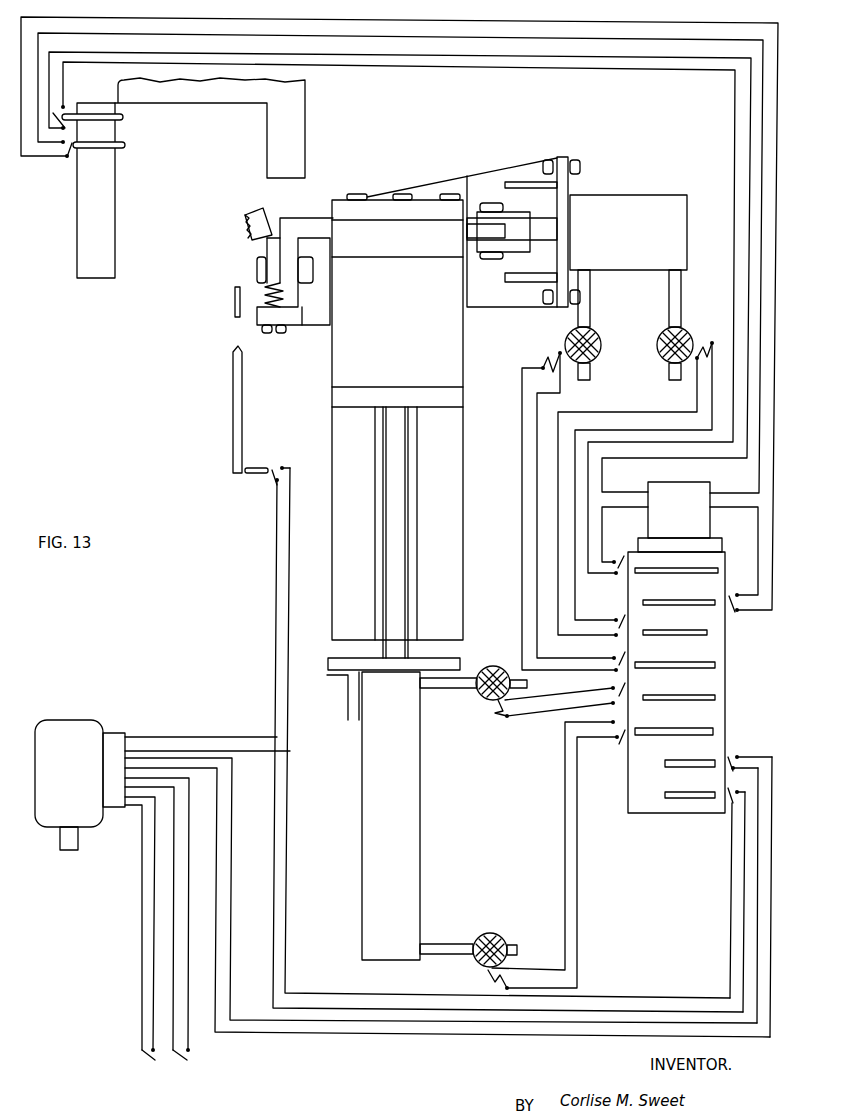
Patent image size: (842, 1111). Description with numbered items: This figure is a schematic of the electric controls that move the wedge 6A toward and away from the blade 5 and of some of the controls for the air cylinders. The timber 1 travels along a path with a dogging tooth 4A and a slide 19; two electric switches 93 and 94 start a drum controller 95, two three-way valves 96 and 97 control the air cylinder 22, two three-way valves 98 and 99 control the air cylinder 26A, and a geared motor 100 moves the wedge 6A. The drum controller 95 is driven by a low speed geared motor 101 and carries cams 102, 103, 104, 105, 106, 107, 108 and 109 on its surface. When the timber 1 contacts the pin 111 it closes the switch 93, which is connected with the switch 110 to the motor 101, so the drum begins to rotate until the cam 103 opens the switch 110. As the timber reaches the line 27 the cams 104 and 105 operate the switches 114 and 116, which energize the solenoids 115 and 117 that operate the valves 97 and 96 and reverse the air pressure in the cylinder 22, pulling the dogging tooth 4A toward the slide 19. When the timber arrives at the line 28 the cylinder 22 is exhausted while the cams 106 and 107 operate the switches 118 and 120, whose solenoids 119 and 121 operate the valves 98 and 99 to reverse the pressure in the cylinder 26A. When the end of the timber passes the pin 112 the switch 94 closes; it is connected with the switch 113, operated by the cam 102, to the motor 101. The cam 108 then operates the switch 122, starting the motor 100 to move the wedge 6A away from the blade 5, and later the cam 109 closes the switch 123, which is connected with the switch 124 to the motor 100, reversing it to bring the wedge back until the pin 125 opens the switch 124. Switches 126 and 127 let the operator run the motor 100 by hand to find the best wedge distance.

The timber 1 is at (193, 108).
The dogging tooth 4A is at (243, 209).
The blade 5 is at (232, 300).
The wedge 6A is at (230, 425).
The slide 19 is at (330, 340).
The air cylinder 22 is at (611, 190).
The air cylinder 26A is at (425, 795).
The line 27 is at (220, 230).
The line 28 is at (215, 365).
The electric switch 93 is at (65, 160).
The electric switch 94 is at (70, 105).
The drum controller 95 is at (731, 652).
The three-way valve 96 is at (594, 337).
The three-way valve 97 is at (685, 333).
The three-way valve 98 is at (474, 693).
The three-way valve 99 is at (475, 938).
The geared motor 100 is at (80, 718).
The low speed geared motor 101 is at (707, 476).
The cam 102 is at (661, 577).
The cam 103 is at (661, 608).
The cam 104 is at (661, 640).
The cam 105 is at (661, 672).
The cam 106 is at (661, 705).
The cam 107 is at (661, 738).
The cam 108 is at (661, 770).
The cam 109 is at (661, 801).
The switch 110 is at (733, 593).
The pin 111 is at (127, 148).
The pin 112 is at (125, 120).
The electric switch 113 is at (617, 556).
The switch 114 is at (619, 619).
The solenoid 115 is at (708, 333).
The switch 116 is at (612, 653).
The solenoid 117 is at (550, 358).
The switch 118 is at (611, 683).
The solenoid 119 is at (507, 718).
The switch 120 is at (612, 722).
The solenoid 121 is at (490, 980).
The switch 122 is at (735, 750).
The switch 123 is at (728, 813).
The switch 124 is at (275, 465).
The pin 125 is at (262, 478).
The switch 126 is at (145, 1065).
The switch 127 is at (180, 1063).